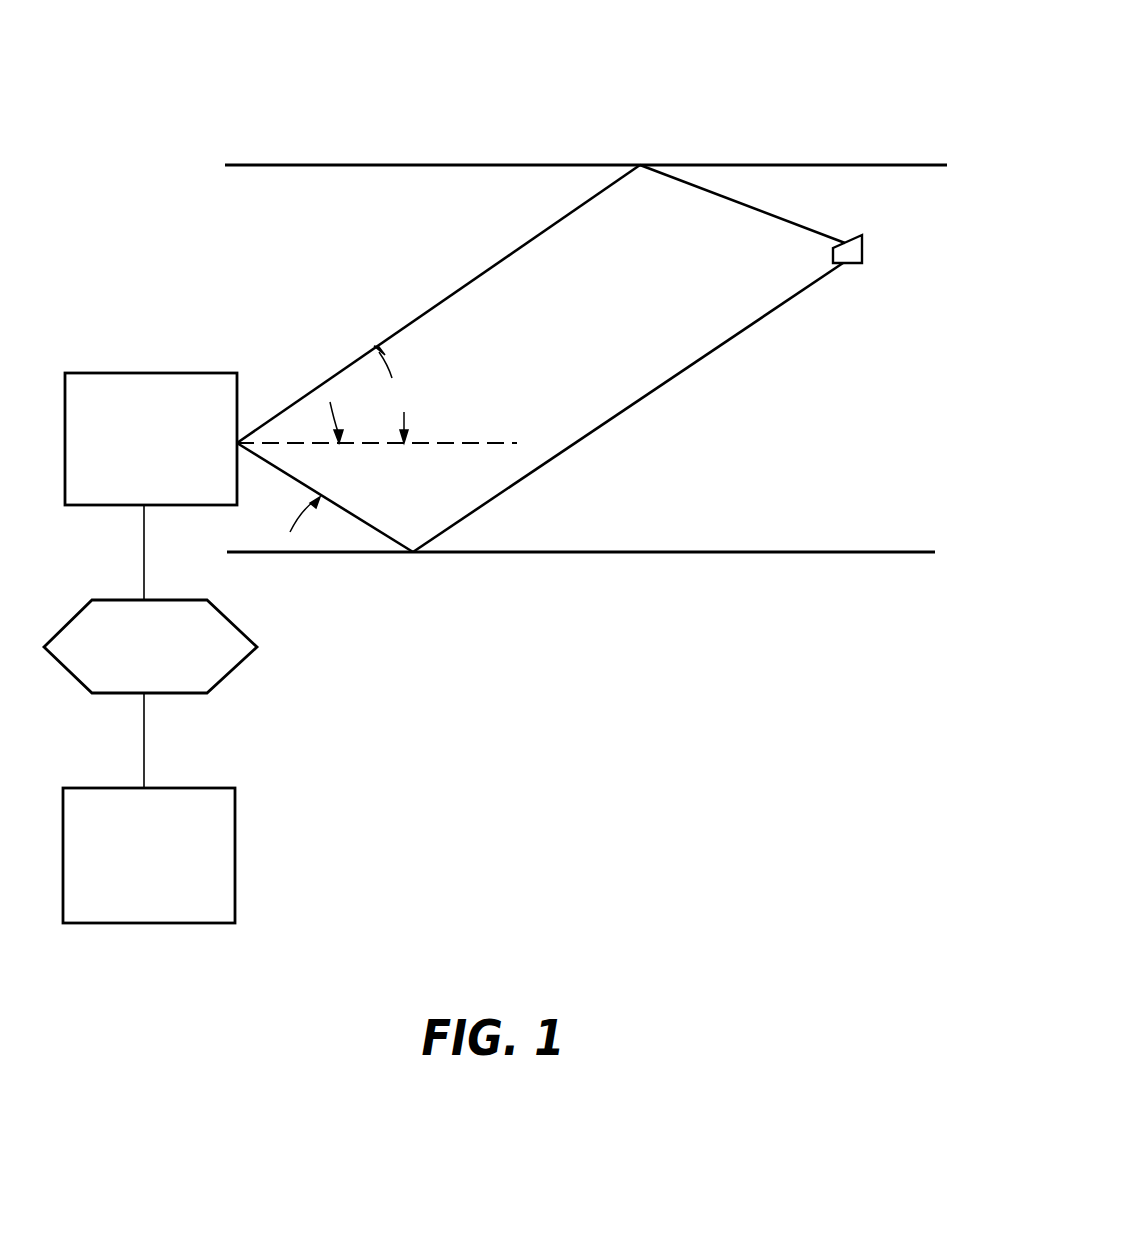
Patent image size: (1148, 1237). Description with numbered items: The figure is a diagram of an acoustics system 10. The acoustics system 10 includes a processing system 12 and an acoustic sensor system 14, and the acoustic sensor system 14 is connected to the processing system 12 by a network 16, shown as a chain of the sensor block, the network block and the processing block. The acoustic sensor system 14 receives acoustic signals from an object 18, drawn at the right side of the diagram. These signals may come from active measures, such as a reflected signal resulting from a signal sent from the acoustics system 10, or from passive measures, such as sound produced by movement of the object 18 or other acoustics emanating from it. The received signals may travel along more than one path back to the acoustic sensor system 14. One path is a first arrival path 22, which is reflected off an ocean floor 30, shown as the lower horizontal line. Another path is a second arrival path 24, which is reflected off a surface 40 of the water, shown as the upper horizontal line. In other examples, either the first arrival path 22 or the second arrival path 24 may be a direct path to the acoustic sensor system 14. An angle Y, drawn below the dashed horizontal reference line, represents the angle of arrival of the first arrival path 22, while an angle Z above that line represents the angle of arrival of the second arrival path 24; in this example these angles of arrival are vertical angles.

The acoustics system 10 is at (233, 42).
The processing system 12 is at (135, 898).
The acoustic sensor system 14 is at (136, 483).
The network 16 is at (136, 680).
The object 18 is at (866, 250).
The first arrival path 22 is at (473, 512).
The second arrival path 24 is at (712, 192).
The ocean floor 30 is at (800, 551).
The surface of water 40 is at (803, 163).